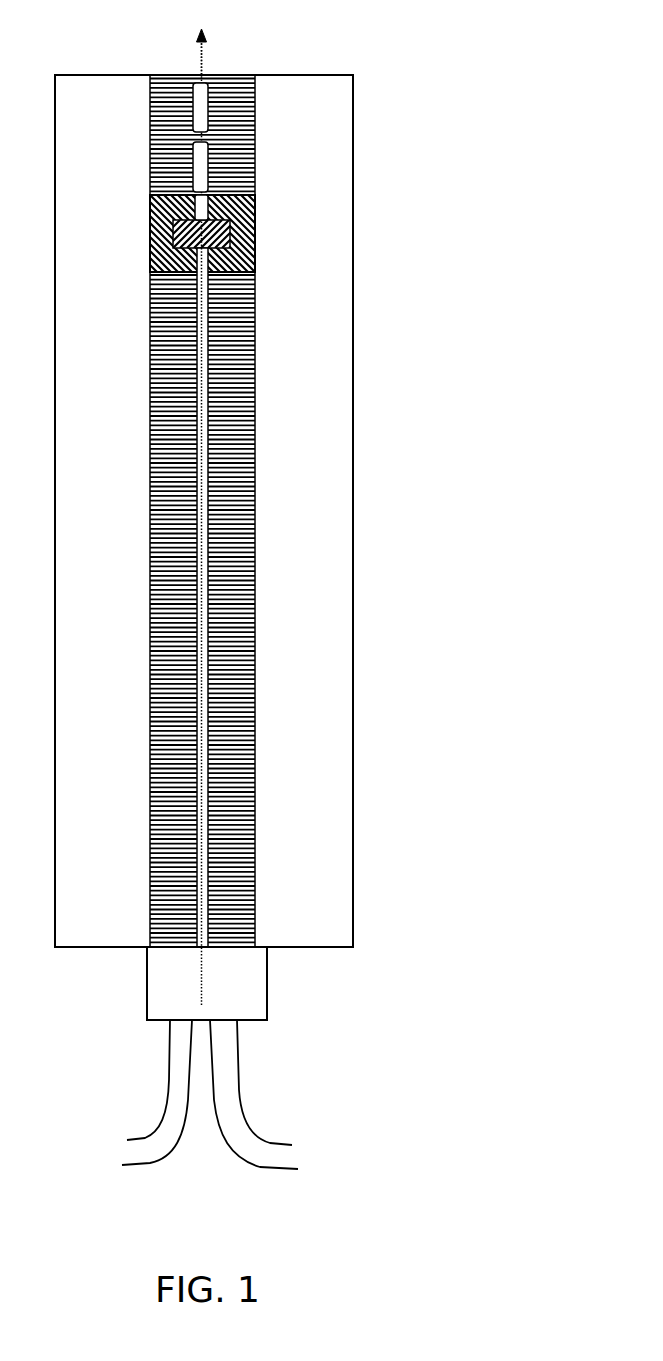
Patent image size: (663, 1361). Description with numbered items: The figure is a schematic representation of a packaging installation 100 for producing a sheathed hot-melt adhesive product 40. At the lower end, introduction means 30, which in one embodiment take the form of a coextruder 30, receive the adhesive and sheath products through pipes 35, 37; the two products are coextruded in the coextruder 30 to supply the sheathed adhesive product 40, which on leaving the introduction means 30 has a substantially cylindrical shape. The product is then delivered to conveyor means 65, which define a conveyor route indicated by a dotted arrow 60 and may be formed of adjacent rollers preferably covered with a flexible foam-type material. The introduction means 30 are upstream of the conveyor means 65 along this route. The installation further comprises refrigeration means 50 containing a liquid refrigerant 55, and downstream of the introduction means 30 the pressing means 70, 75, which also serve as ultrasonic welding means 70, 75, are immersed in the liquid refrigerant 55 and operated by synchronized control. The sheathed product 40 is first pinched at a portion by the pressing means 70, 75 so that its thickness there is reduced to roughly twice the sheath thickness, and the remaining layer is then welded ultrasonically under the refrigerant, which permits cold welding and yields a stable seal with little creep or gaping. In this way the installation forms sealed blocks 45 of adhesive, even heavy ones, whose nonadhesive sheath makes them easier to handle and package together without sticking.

The plasma generating apparatus 100 is at (445, 793).
The refrigeration means 50 is at (353, 672).
The liquid refrigerant 55 is at (327, 622).
The conveyor means 65 is at (245, 447).
The pressing means 70 is at (153, 207).
The pressing means 75 is at (150, 237).
The sheathed hot-melt adhesive product 40 is at (203, 537).
The blocks 45 is at (209, 112).
The dotted arrow 60 is at (199, 66).
The introduction means 30 is at (262, 977).
The pipe 37 is at (182, 1060).
The pipe 35 is at (225, 1048).